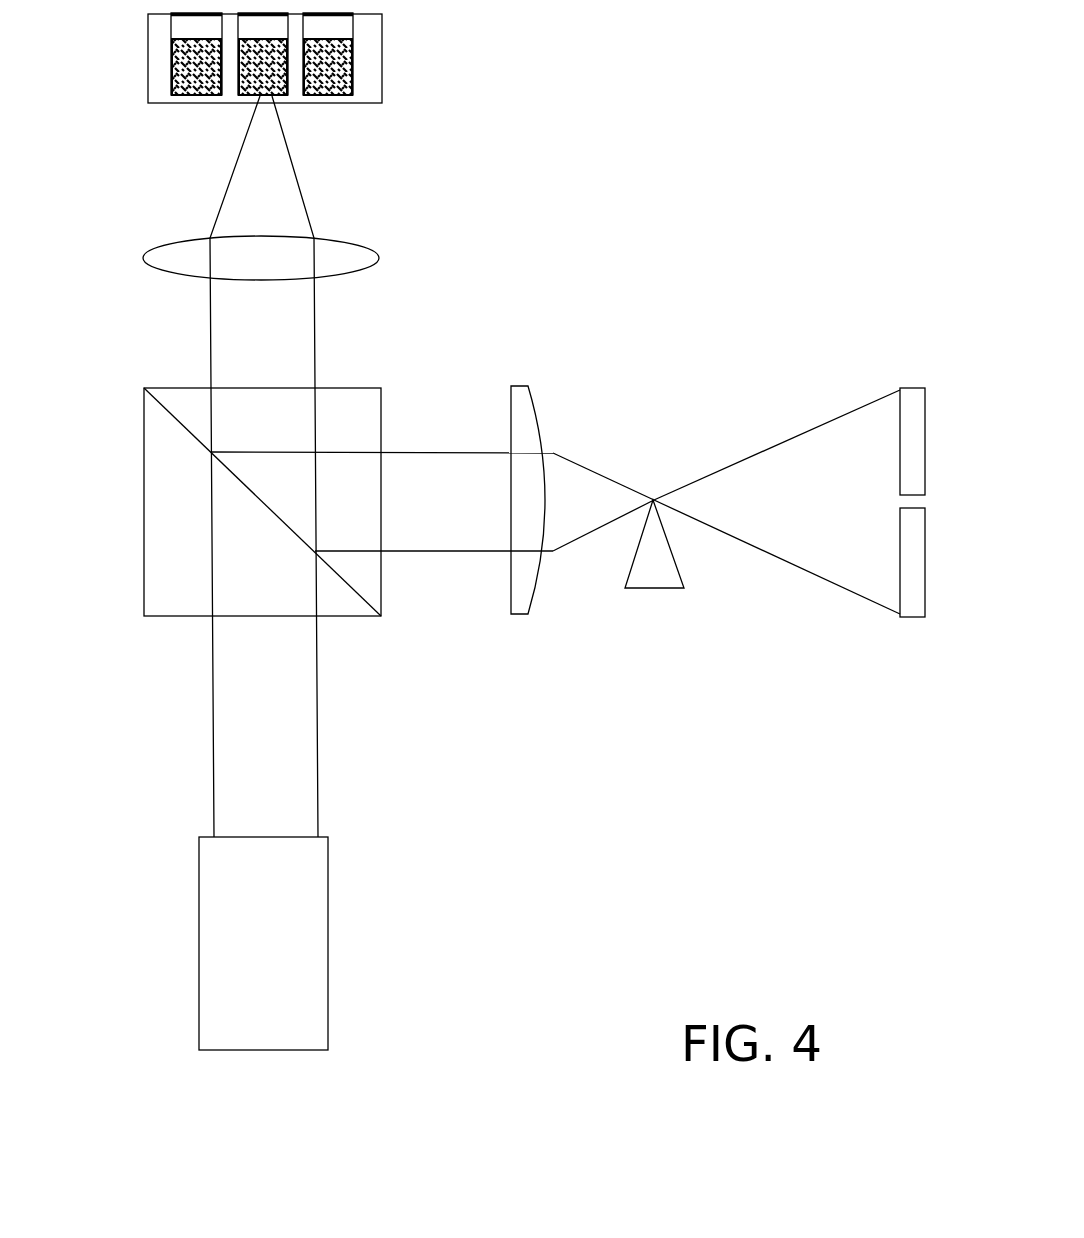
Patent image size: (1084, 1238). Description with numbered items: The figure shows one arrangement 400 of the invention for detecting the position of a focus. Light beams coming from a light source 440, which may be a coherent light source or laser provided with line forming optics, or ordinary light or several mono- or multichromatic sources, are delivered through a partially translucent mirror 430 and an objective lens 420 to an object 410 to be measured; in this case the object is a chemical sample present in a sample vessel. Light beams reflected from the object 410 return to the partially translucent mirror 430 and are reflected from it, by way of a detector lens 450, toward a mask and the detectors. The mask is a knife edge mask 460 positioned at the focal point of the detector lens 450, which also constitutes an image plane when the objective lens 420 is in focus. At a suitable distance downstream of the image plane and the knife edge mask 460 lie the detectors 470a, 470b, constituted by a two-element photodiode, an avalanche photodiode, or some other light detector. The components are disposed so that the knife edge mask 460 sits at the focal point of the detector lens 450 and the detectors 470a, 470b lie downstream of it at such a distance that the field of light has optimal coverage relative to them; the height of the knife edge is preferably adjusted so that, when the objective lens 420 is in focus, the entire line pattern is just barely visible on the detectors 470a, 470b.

The arrangement 400 is at (822, 118).
The object 410 is at (147, 88).
The objective lens 420 is at (375, 242).
The partially translucent mirror 430 is at (138, 493).
The light source 440 is at (197, 953).
The detector lens 450 is at (525, 380).
The knife edge mask 460 is at (655, 596).
The detector 470a is at (913, 383).
The detector 470b is at (910, 622).